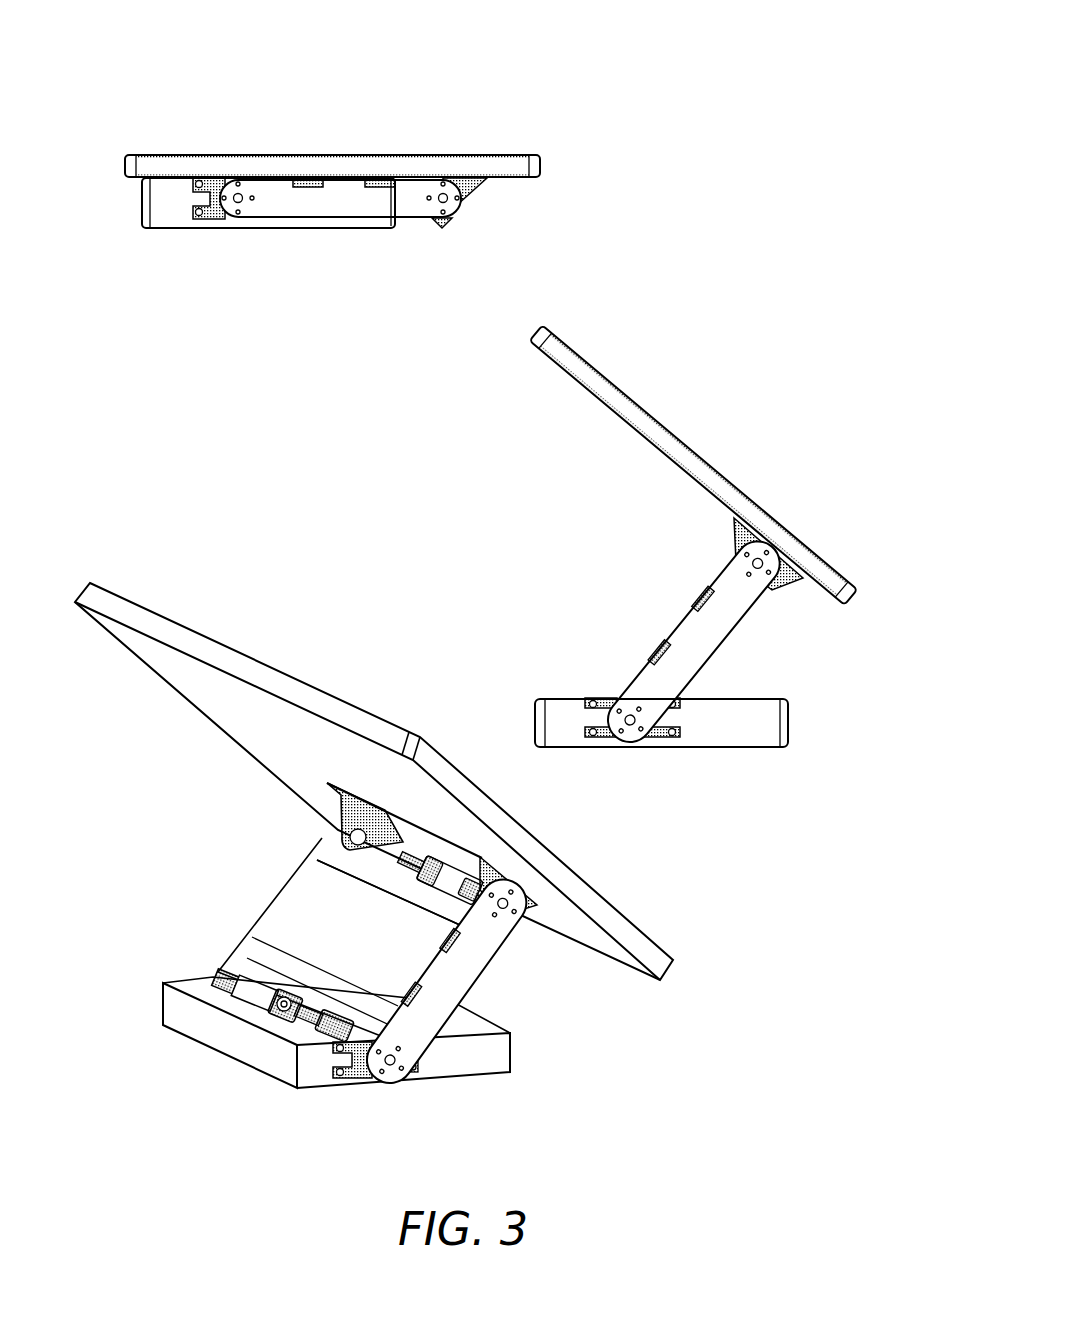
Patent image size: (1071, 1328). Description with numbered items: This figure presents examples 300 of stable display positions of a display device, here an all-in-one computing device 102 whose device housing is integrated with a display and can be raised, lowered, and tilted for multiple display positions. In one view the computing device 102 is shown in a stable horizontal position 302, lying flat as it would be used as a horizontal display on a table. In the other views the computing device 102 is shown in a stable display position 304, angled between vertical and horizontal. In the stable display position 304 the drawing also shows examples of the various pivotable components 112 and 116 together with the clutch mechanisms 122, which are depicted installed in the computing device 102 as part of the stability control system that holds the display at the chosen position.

The examples of stable display positions 300 is at (735, 62).
The stable horizontal position 302 is at (392, 126).
The stable display position 304 is at (431, 512).
The computing device 102 is at (418, 1120).
The pivotable component 112 is at (412, 862).
The pivotable component 116 is at (290, 1003).
The clutch mechanism 122 is at (425, 892).